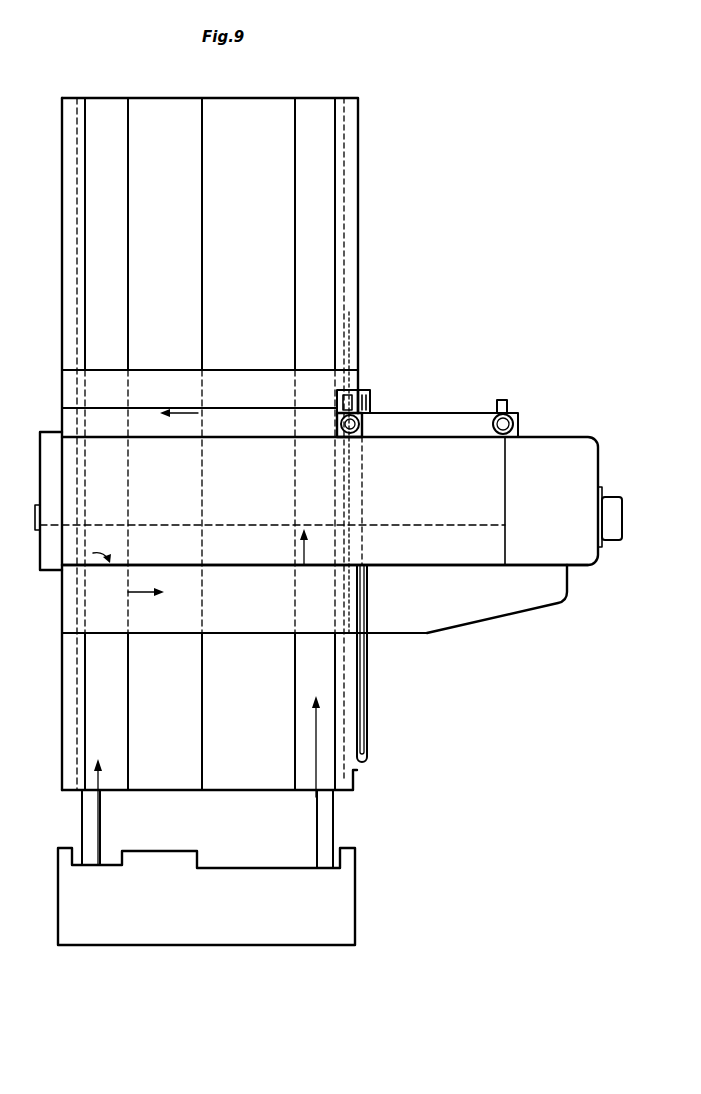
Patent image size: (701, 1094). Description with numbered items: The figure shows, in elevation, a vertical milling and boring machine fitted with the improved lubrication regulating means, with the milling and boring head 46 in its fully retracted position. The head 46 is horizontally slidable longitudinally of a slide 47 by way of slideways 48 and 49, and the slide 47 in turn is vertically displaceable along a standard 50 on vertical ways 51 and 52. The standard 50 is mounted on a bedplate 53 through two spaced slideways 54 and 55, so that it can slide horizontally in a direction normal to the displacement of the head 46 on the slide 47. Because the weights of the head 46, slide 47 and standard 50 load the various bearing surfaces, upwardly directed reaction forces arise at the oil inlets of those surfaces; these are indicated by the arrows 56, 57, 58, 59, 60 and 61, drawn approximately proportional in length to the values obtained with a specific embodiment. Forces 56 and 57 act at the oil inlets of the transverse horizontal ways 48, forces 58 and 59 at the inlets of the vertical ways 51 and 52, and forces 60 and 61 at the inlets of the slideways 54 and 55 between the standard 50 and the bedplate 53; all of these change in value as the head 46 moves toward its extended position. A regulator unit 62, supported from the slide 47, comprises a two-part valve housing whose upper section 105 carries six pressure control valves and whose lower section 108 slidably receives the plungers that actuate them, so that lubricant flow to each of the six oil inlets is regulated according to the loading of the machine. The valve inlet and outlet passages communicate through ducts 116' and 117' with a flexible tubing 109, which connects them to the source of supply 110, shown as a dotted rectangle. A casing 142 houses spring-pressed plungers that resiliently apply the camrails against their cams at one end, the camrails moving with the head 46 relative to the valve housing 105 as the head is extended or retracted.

The milling and boring head 46 is at (48, 450).
The slide 47 is at (63, 384).
The slideway 48 is at (92, 568).
The slideway 49 is at (103, 522).
The standard 50 is at (63, 229).
The way 51 is at (128, 229).
The way 52 is at (202, 229).
The bedplate 53 is at (73, 895).
The slideway 54 is at (112, 870).
The slideway 55 is at (297, 870).
The reaction force arrow 56 is at (99, 550).
The reaction force arrow 57 is at (304, 555).
The reaction force arrow 58 is at (190, 413).
The reaction force arrow 59 is at (140, 594).
The reaction force arrow 60 is at (100, 812).
The reaction force arrow 61 is at (317, 812).
The regulator unit 62 is at (477, 412).
The upper valve housing section 105 is at (345, 395).
The lower valve housing section 108 is at (341, 403).
The flexible tubing 109 is at (352, 326).
The source of supply 110 is at (348, 301).
The duct 116' is at (378, 384).
The duct 117' is at (386, 394).
The casing 142 is at (508, 405).